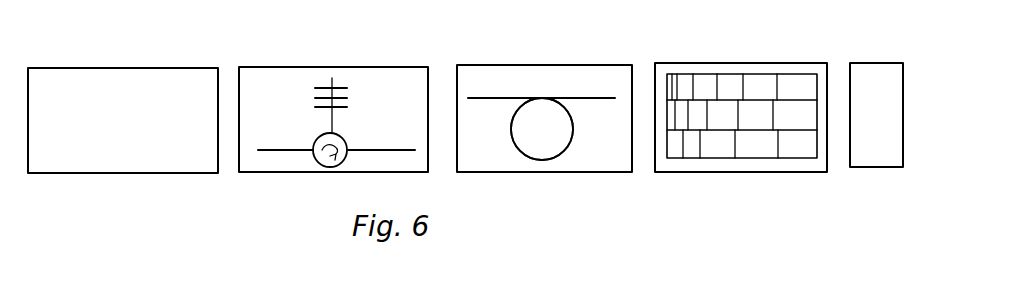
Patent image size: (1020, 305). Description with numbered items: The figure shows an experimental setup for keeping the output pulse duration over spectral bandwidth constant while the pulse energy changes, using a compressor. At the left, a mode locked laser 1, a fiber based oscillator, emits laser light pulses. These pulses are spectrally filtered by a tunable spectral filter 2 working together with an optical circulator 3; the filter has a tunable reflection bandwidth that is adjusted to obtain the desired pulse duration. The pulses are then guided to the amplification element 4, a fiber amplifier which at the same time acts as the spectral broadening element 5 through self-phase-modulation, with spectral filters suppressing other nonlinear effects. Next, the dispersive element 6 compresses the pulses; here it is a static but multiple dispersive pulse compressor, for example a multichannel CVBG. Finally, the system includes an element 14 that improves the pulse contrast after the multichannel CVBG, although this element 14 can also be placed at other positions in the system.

The mode locked laser 1 is at (117, 95).
The tunable spectral filter 2 is at (327, 87).
The optical circulator 3 is at (347, 142).
The amplification element 4 is at (550, 103).
The spectral broadening element 5 is at (573, 37).
The dispersive element 6 is at (743, 95).
The pulse contrast improving element 14 is at (870, 92).